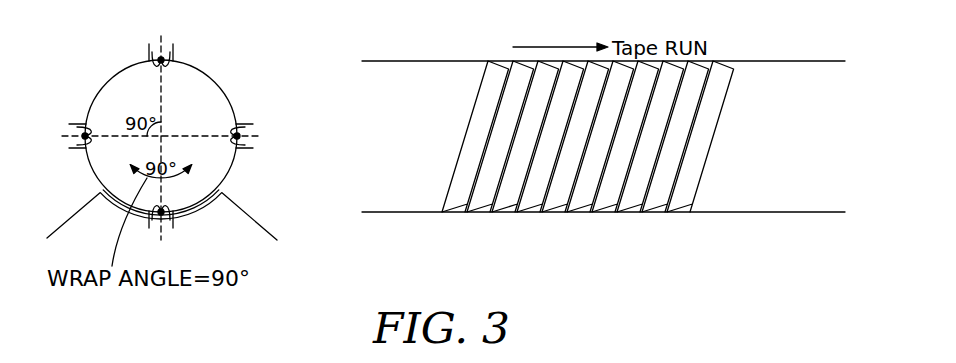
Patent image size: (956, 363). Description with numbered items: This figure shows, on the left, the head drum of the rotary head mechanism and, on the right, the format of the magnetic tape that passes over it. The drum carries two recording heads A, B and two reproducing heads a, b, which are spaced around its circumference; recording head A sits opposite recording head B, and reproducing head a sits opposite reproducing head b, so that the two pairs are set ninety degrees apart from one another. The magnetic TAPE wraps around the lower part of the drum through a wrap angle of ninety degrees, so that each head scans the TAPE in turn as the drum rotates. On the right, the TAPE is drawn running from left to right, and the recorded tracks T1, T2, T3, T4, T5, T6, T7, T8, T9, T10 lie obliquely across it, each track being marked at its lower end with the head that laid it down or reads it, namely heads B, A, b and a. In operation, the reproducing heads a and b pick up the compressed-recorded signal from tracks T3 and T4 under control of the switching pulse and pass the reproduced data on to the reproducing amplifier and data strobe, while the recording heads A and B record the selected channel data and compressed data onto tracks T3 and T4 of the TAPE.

The recording head A is at (582, 212).
The recording head B is at (557, 212).
The reproducing head a is at (682, 212).
The reproducing head b is at (655, 212).
The track T1 is at (700, 136).
The track T2 is at (675, 136).
The track T3 is at (650, 136).
The track T4 is at (625, 136).
The track T5 is at (600, 136).
The track T6 is at (575, 136).
The track T7 is at (550, 136).
The track T8 is at (525, 136).
The track T9 is at (500, 136).
The track T10 is at (475, 136).
The magnetic recording tape TAPE is at (224, 194).